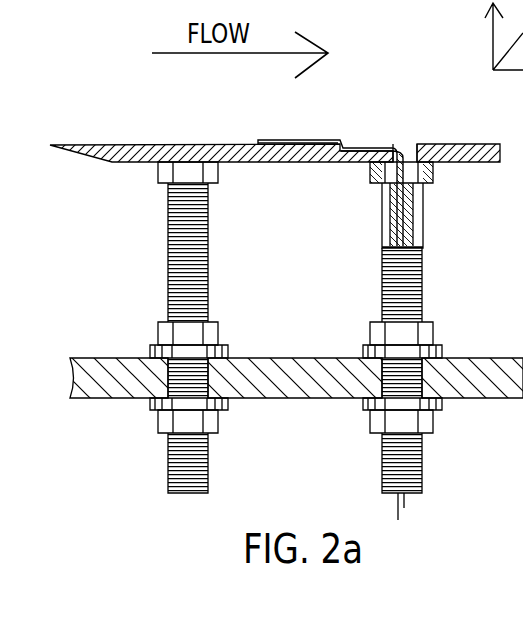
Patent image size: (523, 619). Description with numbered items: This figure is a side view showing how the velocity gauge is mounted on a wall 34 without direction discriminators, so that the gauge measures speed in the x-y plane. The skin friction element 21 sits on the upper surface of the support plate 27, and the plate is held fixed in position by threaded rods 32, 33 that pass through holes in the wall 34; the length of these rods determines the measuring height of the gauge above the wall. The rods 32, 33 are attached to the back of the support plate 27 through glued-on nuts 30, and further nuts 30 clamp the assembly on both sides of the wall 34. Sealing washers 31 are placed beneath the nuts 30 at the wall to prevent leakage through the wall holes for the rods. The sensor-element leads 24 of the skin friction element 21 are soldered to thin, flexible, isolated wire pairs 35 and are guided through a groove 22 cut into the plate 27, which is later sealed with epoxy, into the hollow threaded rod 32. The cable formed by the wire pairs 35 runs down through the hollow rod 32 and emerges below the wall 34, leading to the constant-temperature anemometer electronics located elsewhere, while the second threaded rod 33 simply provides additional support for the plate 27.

The skin friction element 21 is at (305, 140).
The groove 22 is at (412, 150).
The sensor-element leads 24 is at (355, 145).
The support plate 27 is at (185, 144).
The nut 30 is at (214, 180).
The sealing washer 31 is at (150, 344).
The hollow threaded rod 32 is at (382, 273).
The threaded rod 33 is at (168, 223).
The wall 34 is at (465, 358).
The wire pairs 35 is at (406, 506).